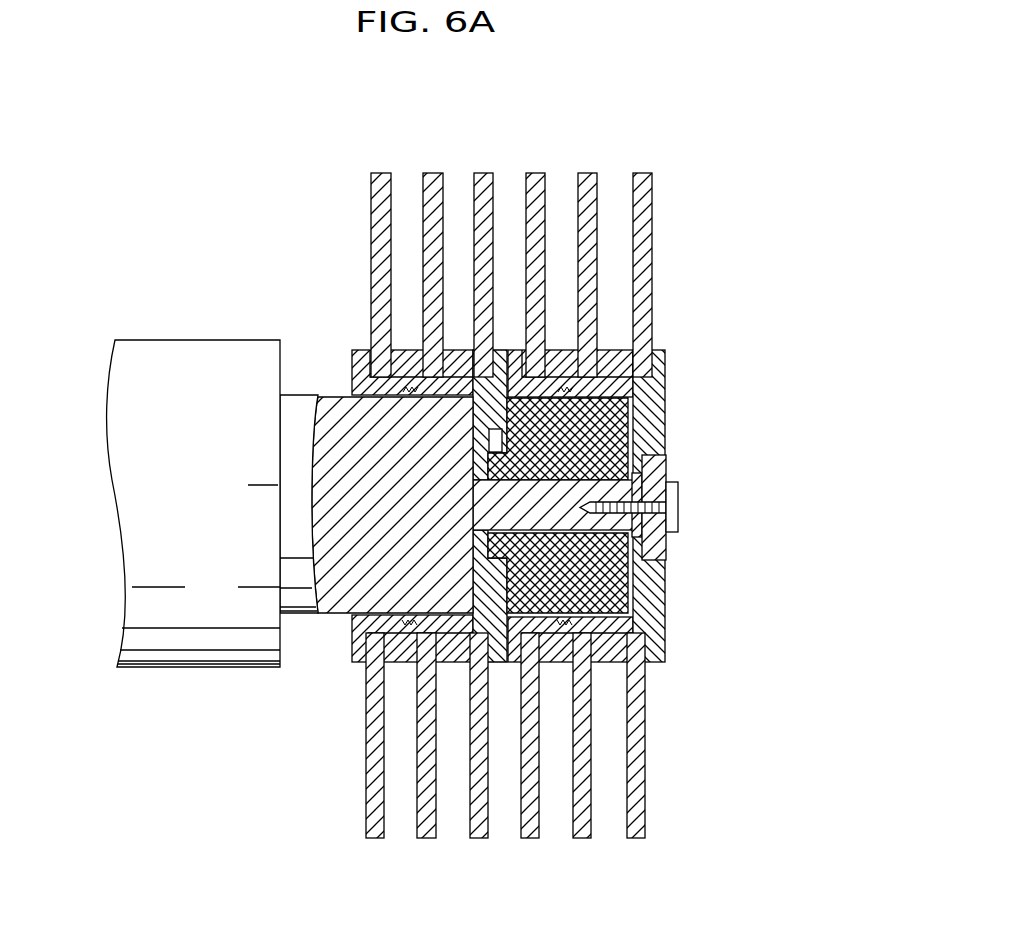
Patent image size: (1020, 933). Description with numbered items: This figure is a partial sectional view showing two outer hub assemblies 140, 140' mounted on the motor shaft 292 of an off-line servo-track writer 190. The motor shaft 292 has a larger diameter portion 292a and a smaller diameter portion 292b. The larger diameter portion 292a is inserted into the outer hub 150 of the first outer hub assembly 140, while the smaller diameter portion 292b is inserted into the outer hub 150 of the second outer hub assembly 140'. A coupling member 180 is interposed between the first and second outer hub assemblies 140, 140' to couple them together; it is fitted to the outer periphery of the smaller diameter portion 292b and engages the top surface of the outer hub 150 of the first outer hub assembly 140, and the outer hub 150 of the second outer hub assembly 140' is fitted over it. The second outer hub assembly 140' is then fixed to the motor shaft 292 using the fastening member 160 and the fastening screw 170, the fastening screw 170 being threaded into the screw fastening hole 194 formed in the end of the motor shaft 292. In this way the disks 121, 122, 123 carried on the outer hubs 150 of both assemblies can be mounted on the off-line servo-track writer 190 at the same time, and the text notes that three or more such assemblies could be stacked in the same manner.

The disk 121 is at (373, 840).
The disk 122 is at (428, 840).
The disk 123 is at (477, 840).
The first outer hub assembly 140 is at (301, 146).
The second outer hub assembly 140' is at (714, 167).
The outer hub 150 is at (682, 438).
The fastening member 160 is at (668, 482).
The fastening screw 170 is at (679, 531).
The coupling member 180 is at (648, 610).
The screw fastening hole 194 is at (640, 568).
The off-line servo-track writer 190 is at (137, 689).
The motor shaft 292 is at (320, 624).
The larger diameter portion 292a is at (333, 397).
The smaller diameter portion 292b is at (660, 420).